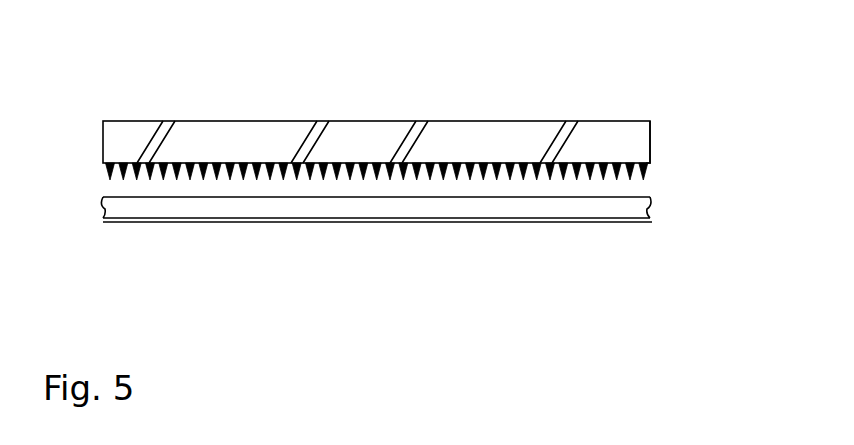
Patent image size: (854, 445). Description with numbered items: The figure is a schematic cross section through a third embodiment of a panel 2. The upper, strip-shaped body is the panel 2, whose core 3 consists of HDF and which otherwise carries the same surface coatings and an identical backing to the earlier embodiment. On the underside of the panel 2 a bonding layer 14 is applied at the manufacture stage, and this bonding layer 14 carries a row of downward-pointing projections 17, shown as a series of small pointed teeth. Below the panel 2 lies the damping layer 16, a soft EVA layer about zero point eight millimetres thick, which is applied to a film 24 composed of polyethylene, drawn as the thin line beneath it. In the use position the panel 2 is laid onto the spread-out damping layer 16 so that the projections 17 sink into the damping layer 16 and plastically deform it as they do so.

The panel 2 is at (474, 78).
The core 3 is at (493, 154).
The projections 17 is at (365, 176).
The bonding layer 14 is at (645, 175).
The damping layer 16 is at (115, 213).
The film 24 is at (563, 223).